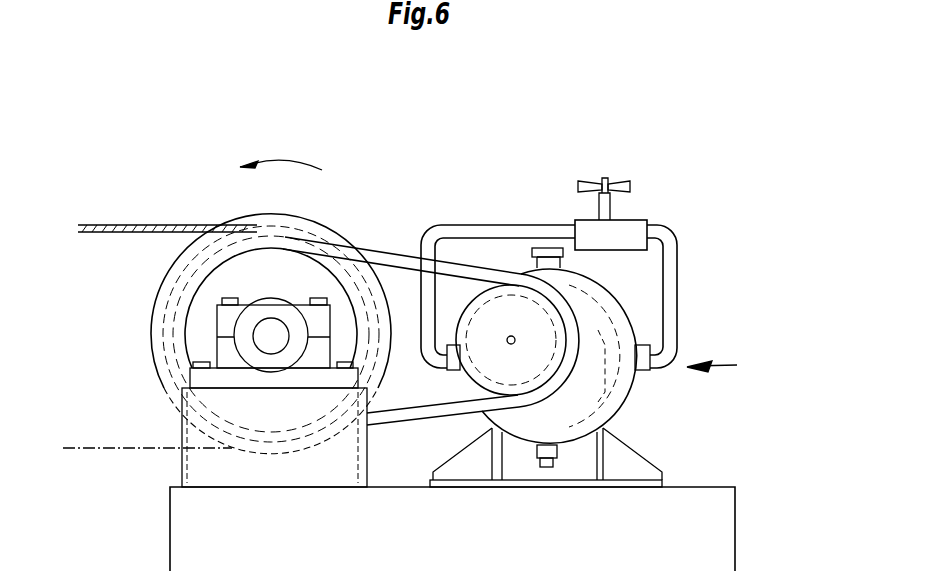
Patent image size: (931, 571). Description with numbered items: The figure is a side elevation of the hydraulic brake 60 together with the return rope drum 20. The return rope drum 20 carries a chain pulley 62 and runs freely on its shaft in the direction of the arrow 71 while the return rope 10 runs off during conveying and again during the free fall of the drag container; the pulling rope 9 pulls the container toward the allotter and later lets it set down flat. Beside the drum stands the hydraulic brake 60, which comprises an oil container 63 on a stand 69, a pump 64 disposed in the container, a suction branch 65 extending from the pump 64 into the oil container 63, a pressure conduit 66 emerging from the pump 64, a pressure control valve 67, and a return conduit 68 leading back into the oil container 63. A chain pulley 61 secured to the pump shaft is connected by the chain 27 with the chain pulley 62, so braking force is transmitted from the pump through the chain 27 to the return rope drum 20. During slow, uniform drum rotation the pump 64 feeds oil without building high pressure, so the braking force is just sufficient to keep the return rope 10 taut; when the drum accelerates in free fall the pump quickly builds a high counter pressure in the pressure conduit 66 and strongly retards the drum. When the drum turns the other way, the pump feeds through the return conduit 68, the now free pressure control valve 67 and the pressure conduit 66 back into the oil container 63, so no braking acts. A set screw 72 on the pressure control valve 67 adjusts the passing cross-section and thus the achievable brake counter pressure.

The pulling rope 9 is at (113, 451).
The return rope 10 is at (102, 224).
The return rope drum 20 is at (257, 232).
The chain 27 is at (387, 252).
The hydraulic brake 60 is at (715, 352).
The chain pulley 61 is at (473, 381).
The chain pulley 62 is at (187, 295).
The oil container 63 is at (598, 417).
The pump 64 is at (510, 367).
The suction branch 65 is at (598, 350).
The pressure conduit 66 is at (663, 267).
The pressure control valve 67 is at (625, 230).
The return conduit 68 is at (468, 232).
The stand 69 is at (582, 463).
The arrow 71 is at (292, 157).
The set screw 72 is at (615, 183).